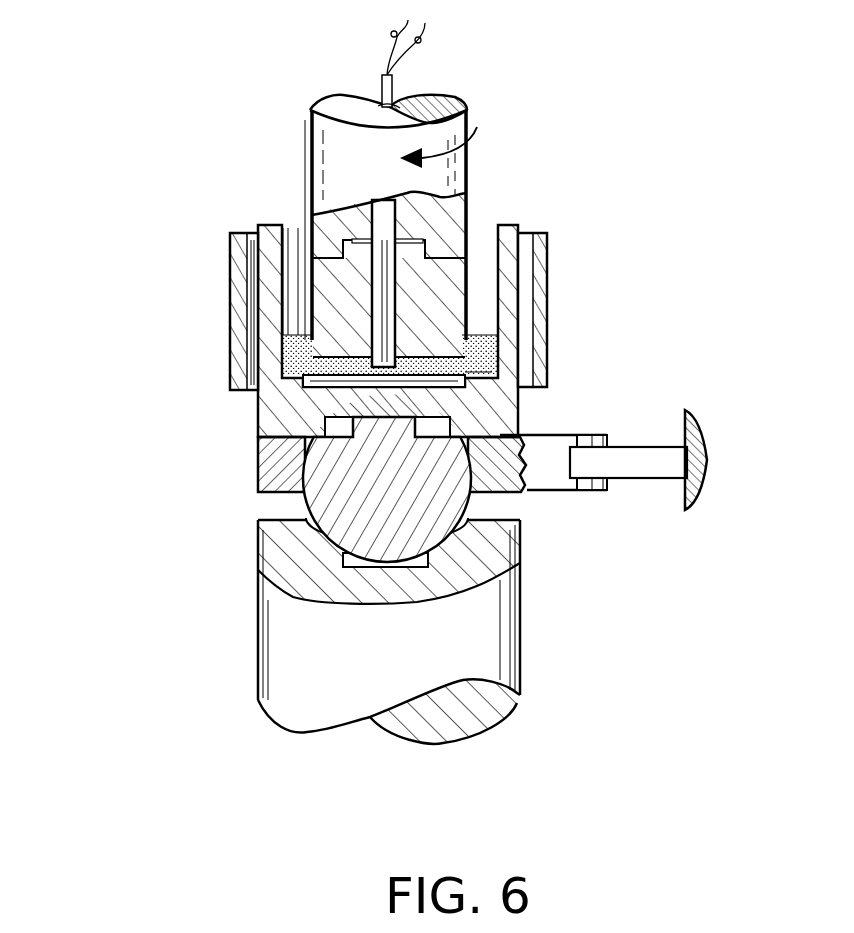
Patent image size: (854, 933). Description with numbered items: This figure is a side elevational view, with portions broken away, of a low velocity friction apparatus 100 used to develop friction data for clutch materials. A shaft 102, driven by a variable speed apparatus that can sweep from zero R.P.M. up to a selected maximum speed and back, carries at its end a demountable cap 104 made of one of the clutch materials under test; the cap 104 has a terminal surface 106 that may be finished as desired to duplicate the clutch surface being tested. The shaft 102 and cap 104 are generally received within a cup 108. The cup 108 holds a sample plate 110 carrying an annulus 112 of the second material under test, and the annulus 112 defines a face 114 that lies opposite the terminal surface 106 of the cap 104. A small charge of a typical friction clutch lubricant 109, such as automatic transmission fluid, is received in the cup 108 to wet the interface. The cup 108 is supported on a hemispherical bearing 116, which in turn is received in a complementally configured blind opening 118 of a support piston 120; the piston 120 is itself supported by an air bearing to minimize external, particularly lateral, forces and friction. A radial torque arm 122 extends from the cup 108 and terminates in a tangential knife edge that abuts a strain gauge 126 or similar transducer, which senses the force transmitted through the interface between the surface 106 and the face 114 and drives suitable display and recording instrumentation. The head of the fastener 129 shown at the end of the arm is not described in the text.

The low velocity friction apparatus 100 is at (610, 302).
The shaft 102 is at (452, 165).
The demountable cap 104 is at (428, 297).
The terminal surface 106 is at (495, 345).
The cup 108 is at (500, 412).
The friction clutch lubricant 109 is at (290, 360).
The sample plate 110 is at (500, 378).
The annulus 112 is at (303, 383).
The face 114 is at (300, 330).
The hemispherical bearing 116 is at (517, 505).
The blind opening 118 is at (318, 500).
The support piston 120 is at (468, 643).
The radial torque arm 122 is at (520, 435).
The strain gauge 126 is at (643, 450).
The screw head 129 is at (585, 492).